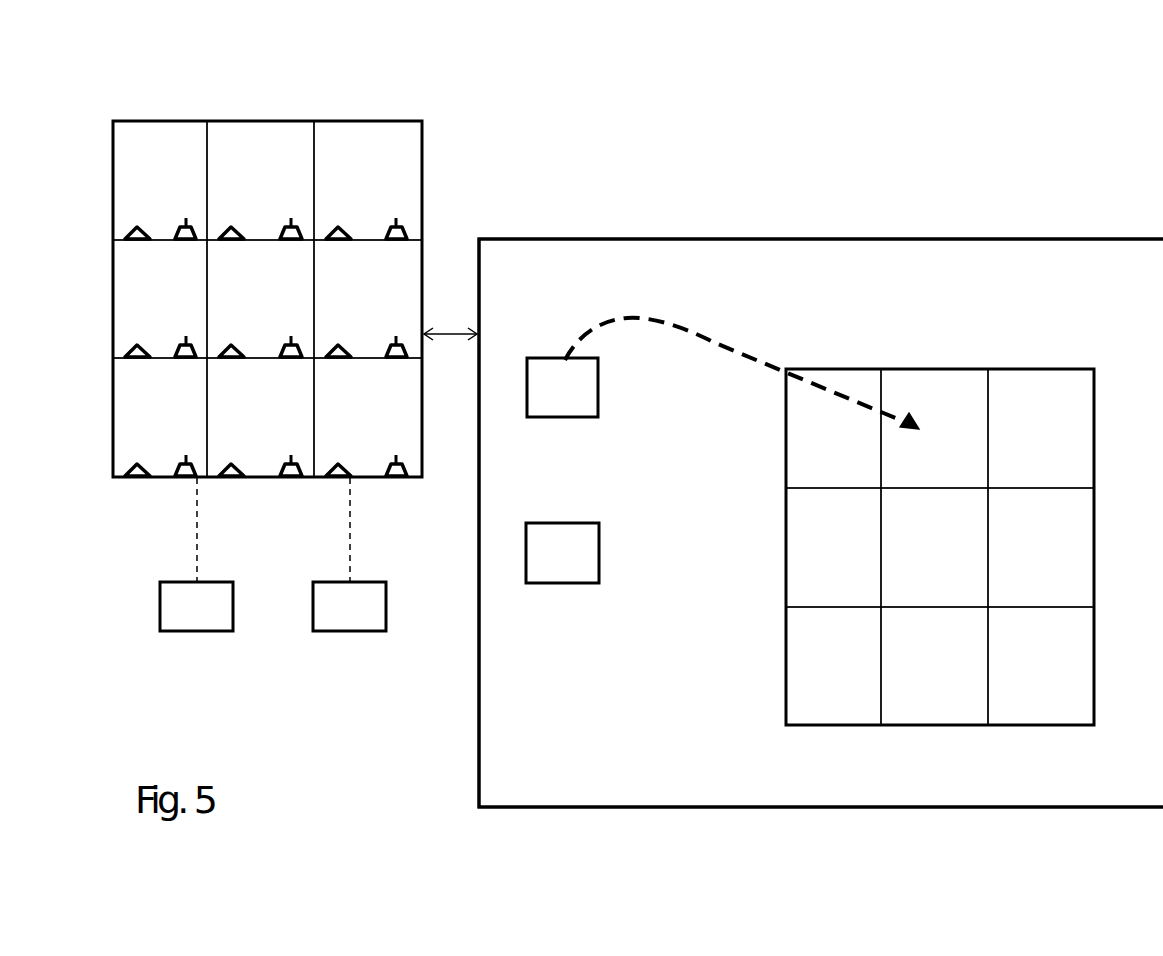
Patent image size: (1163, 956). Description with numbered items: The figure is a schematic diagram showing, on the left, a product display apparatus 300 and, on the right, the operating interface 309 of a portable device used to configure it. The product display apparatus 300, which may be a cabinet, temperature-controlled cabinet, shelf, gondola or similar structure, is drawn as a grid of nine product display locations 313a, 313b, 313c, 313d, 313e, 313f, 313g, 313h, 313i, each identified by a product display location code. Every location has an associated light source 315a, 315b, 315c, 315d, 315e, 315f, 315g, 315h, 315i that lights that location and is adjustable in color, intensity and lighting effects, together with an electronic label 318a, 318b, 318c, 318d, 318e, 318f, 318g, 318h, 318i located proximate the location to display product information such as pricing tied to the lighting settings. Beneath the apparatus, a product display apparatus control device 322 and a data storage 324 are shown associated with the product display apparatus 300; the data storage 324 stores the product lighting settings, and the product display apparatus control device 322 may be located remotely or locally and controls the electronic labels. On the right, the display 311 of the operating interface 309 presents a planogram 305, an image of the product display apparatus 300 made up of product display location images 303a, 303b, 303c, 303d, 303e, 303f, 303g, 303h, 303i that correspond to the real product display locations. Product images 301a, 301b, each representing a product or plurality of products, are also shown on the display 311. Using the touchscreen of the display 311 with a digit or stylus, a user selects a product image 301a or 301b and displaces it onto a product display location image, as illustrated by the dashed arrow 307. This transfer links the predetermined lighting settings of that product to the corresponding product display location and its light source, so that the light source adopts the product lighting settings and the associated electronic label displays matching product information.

The product display apparatus 300 is at (262, 121).
The product display location 313a is at (133, 157).
The product display location 313b is at (232, 157).
The product display location 313c is at (336, 157).
The product display location 313d is at (133, 276).
The product display location 313e is at (232, 276).
The product display location 313f is at (336, 276).
The product display location 313g is at (133, 393).
The product display location 313h is at (232, 393).
The product display location 313i is at (336, 393).
The light source 315a is at (130, 226).
The light source 315b is at (224, 226).
The light source 315c is at (331, 226).
The light source 315d is at (130, 344).
The light source 315e is at (224, 344).
The light source 315f is at (331, 344).
The light source 315g is at (130, 463).
The light source 315h is at (224, 463).
The light source 315i is at (331, 463).
The electronic label 318a is at (176, 212).
The electronic label 318b is at (284, 212).
The electronic label 318c is at (385, 212).
The electronic label 318d is at (176, 331).
The electronic label 318e is at (284, 331).
The electronic label 318f is at (385, 331).
The electronic label 318g is at (176, 449).
The electronic label 318h is at (284, 449).
The electronic label 318i is at (385, 449).
The product display apparatus control device 322 is at (175, 631).
The data storage 324 is at (336, 631).
The product image 301a is at (536, 417).
The product image 301b is at (536, 583).
The product display location image 303a is at (862, 472).
The product display location image 303b is at (905, 472).
The product display location image 303c is at (1011, 472).
The product display location image 303d is at (869, 593).
The product display location image 303e is at (905, 593).
The product display location image 303f is at (1013, 593).
The product display location image 303g is at (810, 712).
The product display location image 303h is at (912, 712).
The product display location image 303i is at (1067, 712).
The planogram 305 is at (942, 369).
The dashed arrow 307 is at (771, 364).
The operating interface 309 is at (610, 239).
The display 311 is at (878, 285).